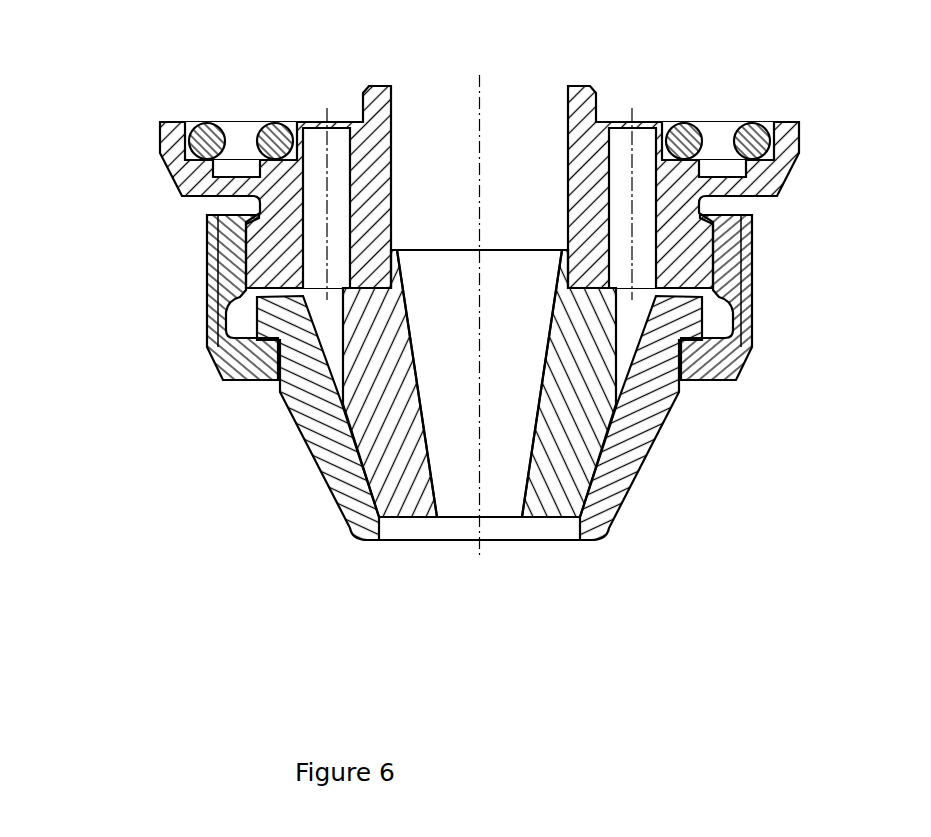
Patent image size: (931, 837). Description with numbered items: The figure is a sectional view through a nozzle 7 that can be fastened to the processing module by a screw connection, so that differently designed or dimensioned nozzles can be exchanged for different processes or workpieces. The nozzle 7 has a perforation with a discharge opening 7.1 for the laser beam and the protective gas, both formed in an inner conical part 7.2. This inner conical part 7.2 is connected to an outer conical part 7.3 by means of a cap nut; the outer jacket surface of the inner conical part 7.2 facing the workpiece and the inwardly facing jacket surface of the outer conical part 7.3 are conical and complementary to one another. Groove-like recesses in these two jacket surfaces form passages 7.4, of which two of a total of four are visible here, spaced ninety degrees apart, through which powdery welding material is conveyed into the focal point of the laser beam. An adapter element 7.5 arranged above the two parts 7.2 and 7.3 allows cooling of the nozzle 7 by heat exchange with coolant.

The nozzle 7 is at (429, 334).
The discharge opening 7.1 is at (462, 503).
The inner conical part 7.2 is at (383, 430).
The outer conical part 7.3 is at (657, 410).
The passages 7.4 is at (377, 500).
The adapter element 7.5 is at (256, 123).